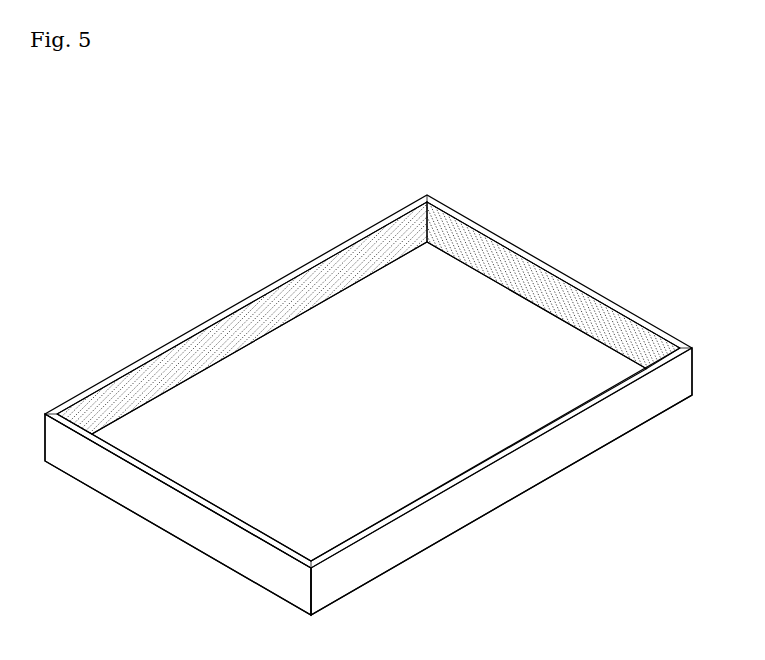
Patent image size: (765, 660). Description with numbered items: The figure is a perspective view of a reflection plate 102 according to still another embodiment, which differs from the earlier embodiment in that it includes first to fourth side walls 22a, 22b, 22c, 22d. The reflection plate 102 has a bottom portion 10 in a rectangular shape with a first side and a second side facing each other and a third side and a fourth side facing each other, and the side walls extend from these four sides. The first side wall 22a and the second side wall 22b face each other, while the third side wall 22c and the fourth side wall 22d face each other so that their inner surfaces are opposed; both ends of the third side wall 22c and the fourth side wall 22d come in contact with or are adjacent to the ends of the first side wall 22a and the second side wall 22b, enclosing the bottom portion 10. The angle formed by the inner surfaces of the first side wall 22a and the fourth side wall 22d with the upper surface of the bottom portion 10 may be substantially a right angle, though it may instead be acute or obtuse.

The reflection plate 102 is at (532, 138).
The bottom portion 10 is at (480, 443).
The first side wall 22a is at (569, 298).
The second side wall 22b is at (178, 523).
The third side wall 22c is at (238, 327).
The fourth side wall 22d is at (585, 433).